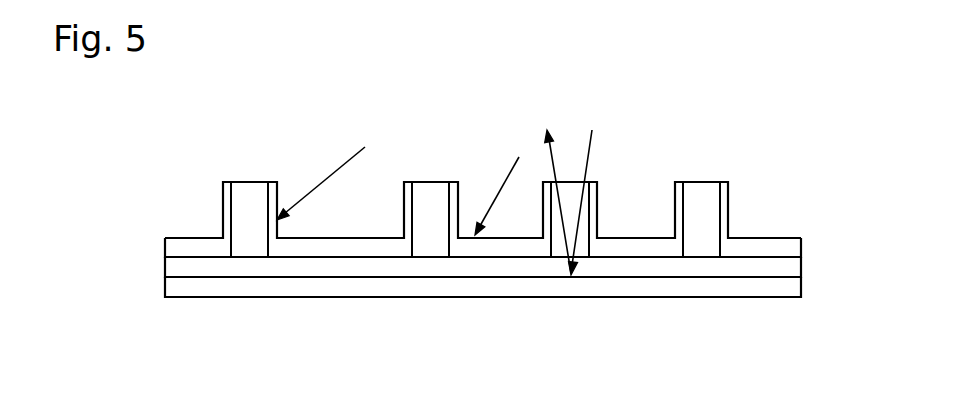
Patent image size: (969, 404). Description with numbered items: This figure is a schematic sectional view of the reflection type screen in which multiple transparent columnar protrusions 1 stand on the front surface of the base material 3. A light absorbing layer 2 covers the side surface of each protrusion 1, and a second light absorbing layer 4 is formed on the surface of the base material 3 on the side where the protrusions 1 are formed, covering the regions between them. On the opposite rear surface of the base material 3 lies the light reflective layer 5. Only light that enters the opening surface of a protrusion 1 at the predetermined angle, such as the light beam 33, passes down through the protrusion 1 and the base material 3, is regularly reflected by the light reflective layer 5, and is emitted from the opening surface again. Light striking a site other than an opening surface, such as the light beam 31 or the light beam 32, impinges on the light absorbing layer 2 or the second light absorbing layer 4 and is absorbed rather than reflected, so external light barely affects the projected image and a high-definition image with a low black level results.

The protrusion 1 is at (700, 180).
The light absorbing layer 2 is at (730, 198).
The base material 3 is at (788, 267).
The second light absorbing layer 4 is at (775, 242).
The light reflective layer 5 is at (748, 288).
The light beam 31 is at (342, 165).
The light beam 32 is at (502, 173).
The light beam 33 is at (586, 144).